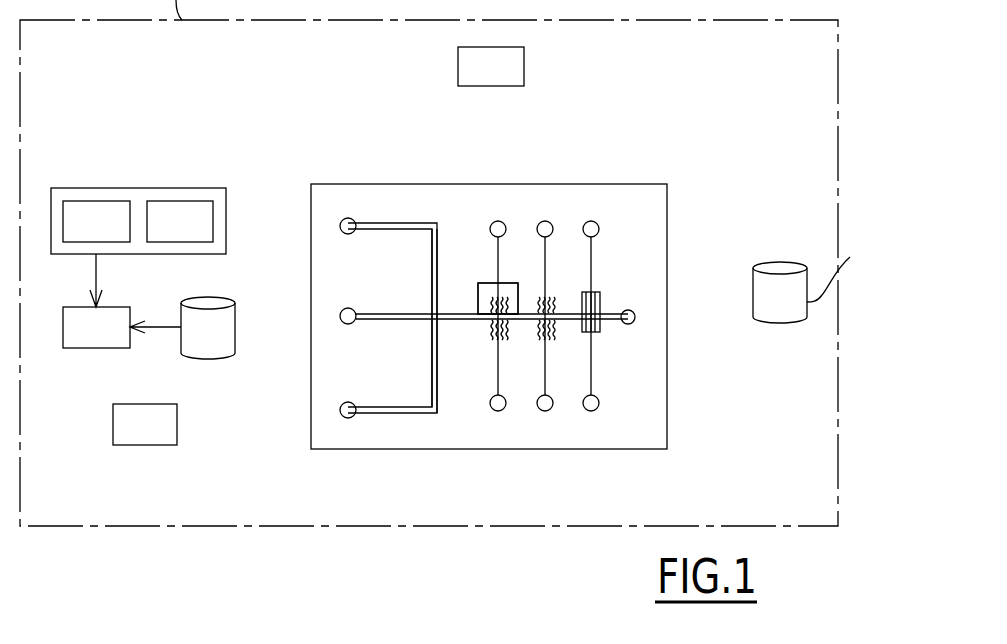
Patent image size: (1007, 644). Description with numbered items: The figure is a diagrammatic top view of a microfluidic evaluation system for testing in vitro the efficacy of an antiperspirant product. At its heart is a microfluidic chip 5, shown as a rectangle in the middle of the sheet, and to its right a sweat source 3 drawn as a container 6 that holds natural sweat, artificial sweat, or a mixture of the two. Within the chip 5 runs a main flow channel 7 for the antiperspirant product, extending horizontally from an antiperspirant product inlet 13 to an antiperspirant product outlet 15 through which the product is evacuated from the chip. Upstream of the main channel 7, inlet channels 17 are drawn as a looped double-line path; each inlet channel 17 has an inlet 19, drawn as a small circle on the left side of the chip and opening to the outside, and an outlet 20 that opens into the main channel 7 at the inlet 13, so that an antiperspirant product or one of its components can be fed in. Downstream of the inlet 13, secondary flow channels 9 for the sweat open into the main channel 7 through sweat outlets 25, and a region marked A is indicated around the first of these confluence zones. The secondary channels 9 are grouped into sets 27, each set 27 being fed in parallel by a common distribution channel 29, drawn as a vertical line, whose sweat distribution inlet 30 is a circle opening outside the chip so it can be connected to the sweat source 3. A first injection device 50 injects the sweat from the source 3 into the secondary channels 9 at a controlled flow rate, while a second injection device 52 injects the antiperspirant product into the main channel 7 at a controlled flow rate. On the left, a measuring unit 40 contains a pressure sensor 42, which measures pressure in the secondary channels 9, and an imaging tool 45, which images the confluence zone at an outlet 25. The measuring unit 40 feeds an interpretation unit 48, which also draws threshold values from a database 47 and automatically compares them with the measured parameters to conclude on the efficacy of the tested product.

The sweat source 3 is at (780, 292).
The microfluidic chip 5 is at (397, 184).
The container 6 is at (837, 270).
The main flow channel 7 is at (470, 314).
The secondary flow channel 9 is at (580, 305).
The antiperspirant product inlet 13 is at (437, 350).
The antiperspirant product outlet 15 is at (635, 322).
The inlet channel 17 is at (381, 223).
The inlet 19 is at (341, 229).
The outlet 20 is at (425, 306).
The sweat outlet 25 is at (602, 306).
The set of secondary channels 27 is at (508, 282).
The distribution channel 29 is at (597, 252).
The sweat distribution inlet 30 is at (497, 221).
The measuring unit 40 is at (170, 188).
The pressure sensor 42 is at (96, 221).
The imaging tool 45 is at (180, 221).
The database 47 is at (208, 328).
The interpretation unit 48 is at (96, 327).
The first injection device 50 is at (491, 66).
The second injection device 52 is at (145, 424).
The sensing zone A is at (490, 283).